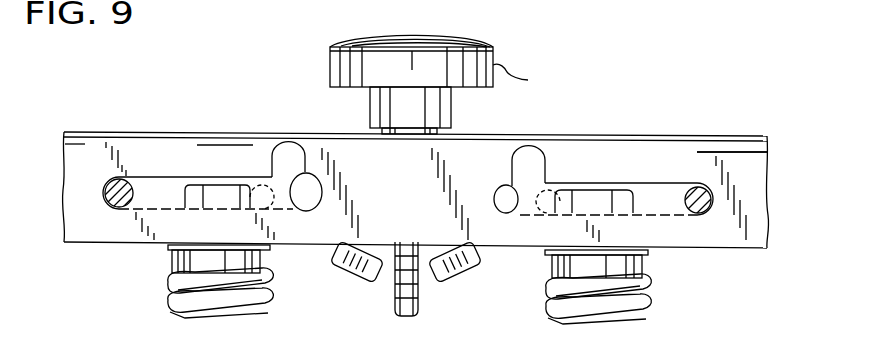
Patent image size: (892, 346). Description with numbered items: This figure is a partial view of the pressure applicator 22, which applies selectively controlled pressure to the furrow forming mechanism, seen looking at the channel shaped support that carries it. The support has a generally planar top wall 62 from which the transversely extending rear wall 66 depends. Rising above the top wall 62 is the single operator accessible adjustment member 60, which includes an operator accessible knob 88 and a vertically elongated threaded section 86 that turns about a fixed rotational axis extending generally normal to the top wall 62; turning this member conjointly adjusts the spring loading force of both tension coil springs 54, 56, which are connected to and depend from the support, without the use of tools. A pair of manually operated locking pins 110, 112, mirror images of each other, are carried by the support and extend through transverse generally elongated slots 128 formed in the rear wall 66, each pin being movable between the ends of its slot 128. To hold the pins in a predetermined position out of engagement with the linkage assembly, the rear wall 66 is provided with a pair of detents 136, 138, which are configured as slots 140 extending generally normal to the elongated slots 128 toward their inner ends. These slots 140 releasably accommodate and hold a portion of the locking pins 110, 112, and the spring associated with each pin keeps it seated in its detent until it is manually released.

The pressure applicator 22 is at (410, 77).
The adjustment member 60 is at (325, 72).
The knob 88 is at (530, 46).
The top wall 62 is at (106, 130).
The rear wall 66 is at (737, 148).
The slot 128 is at (152, 178).
The detent 138 is at (291, 140).
The detent 136 is at (538, 146).
The slot 140 is at (285, 208).
The locking pin 112 is at (125, 218).
The locking pin 110 is at (692, 216).
The threaded section 86 is at (420, 300).
The tension coil spring 56 is at (270, 306).
The tension coil spring 54 is at (640, 310).